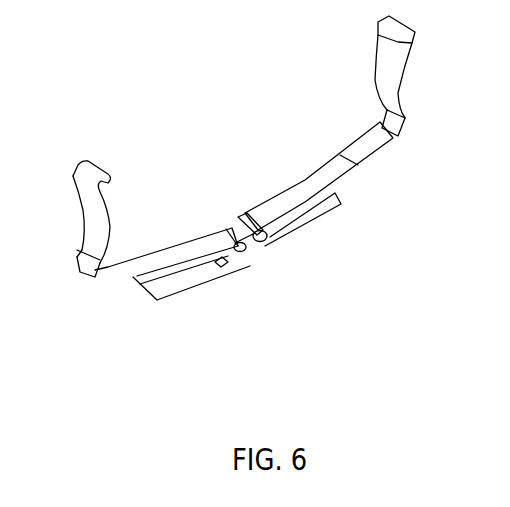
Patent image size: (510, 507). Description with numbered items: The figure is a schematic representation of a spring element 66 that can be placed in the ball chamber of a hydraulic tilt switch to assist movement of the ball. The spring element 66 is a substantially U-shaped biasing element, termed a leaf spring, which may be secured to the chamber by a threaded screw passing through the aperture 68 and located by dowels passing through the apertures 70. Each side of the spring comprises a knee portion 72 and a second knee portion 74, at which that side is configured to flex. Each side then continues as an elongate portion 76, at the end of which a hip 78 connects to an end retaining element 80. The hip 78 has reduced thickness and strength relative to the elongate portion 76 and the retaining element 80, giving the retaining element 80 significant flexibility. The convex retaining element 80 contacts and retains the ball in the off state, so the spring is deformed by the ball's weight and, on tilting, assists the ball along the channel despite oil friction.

The spring element 66 is at (188, 74).
The aperture 68 is at (264, 243).
The apertures 70 is at (280, 237).
The knee portion 72 is at (222, 233).
The second knee portion 74 is at (142, 288).
The elongate portion 76 is at (167, 245).
The hip 78 is at (90, 277).
The end retaining element 80 is at (82, 212).